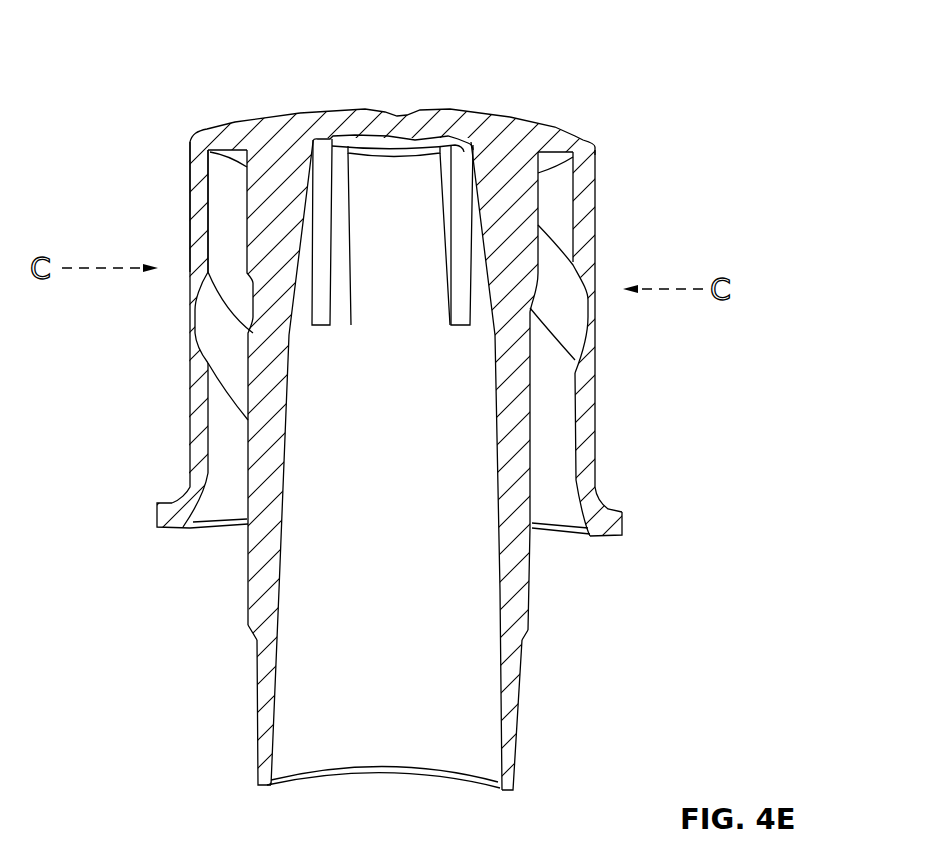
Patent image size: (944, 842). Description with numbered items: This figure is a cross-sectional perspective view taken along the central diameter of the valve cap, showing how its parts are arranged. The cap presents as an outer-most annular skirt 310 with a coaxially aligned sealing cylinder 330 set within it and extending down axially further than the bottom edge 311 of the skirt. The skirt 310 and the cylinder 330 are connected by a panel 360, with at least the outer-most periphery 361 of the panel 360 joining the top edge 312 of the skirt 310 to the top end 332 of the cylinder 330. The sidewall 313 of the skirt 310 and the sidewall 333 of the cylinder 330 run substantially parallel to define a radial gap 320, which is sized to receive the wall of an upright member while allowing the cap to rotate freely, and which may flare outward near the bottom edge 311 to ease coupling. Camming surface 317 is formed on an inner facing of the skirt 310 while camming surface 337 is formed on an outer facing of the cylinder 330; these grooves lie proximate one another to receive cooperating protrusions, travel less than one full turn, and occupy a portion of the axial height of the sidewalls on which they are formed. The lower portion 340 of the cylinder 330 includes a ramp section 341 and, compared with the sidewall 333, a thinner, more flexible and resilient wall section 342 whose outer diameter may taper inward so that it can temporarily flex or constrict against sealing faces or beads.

The skirt 310 is at (205, 420).
The bottom edge of skirt 311 is at (163, 540).
The top edge of skirt 312 is at (586, 180).
The sidewall of skirt 313 is at (199, 204).
The camming surface 317 is at (222, 325).
The radial gap 320 is at (220, 545).
The sealing cylinder 330 is at (519, 603).
The top end of cylinder 332 is at (231, 125).
The sidewall of cylinder 333 is at (254, 247).
The camming surface 337 is at (578, 323).
The lower portion of cylinder 340 is at (534, 712).
The ramp section 341 is at (518, 633).
The wall section 342 is at (514, 752).
The panel 360 is at (238, 112).
The outer-most periphery of panel 361 is at (589, 139).